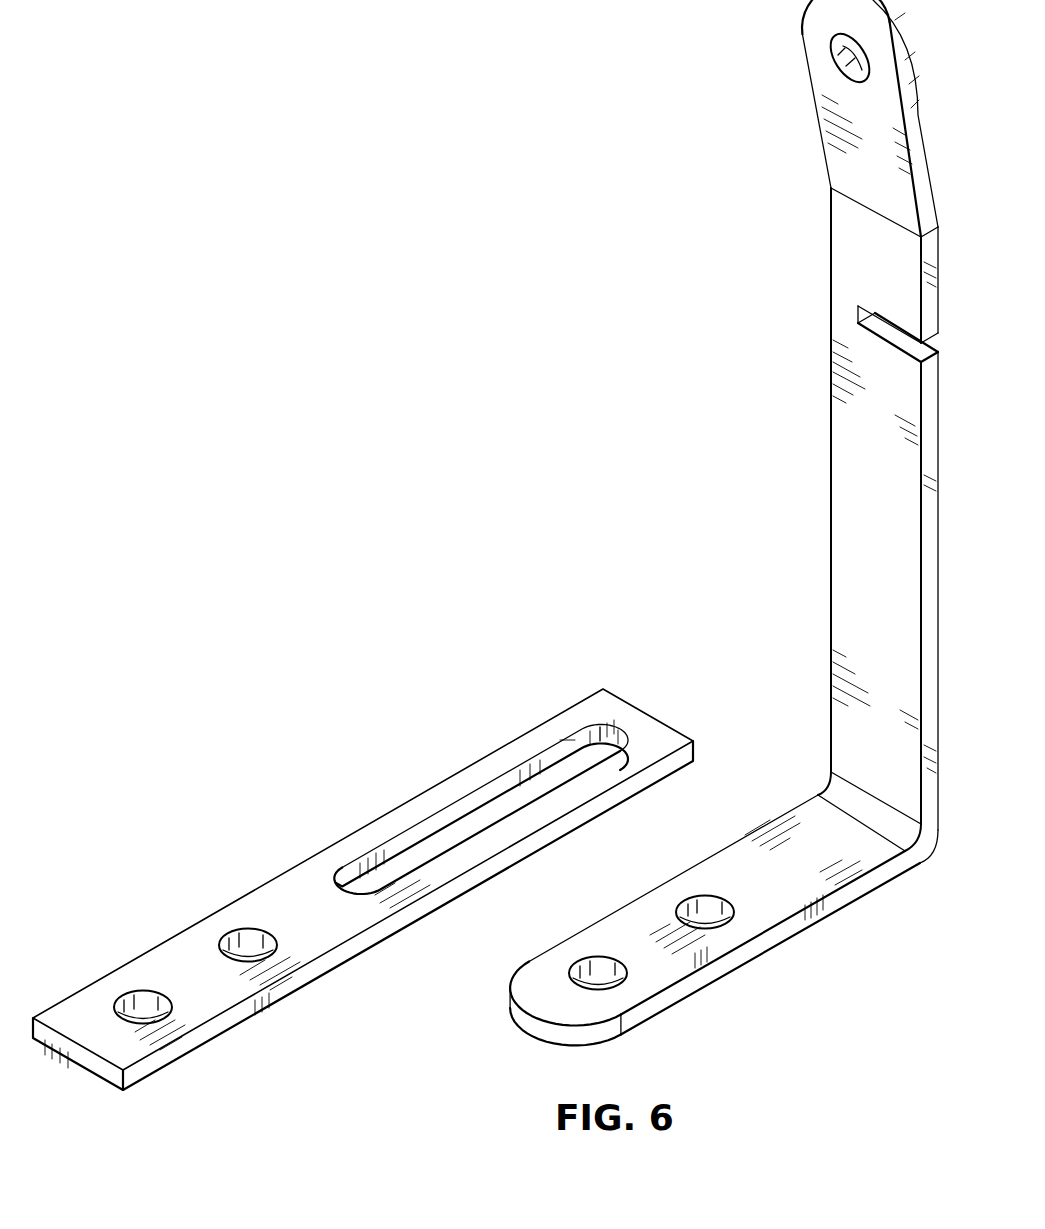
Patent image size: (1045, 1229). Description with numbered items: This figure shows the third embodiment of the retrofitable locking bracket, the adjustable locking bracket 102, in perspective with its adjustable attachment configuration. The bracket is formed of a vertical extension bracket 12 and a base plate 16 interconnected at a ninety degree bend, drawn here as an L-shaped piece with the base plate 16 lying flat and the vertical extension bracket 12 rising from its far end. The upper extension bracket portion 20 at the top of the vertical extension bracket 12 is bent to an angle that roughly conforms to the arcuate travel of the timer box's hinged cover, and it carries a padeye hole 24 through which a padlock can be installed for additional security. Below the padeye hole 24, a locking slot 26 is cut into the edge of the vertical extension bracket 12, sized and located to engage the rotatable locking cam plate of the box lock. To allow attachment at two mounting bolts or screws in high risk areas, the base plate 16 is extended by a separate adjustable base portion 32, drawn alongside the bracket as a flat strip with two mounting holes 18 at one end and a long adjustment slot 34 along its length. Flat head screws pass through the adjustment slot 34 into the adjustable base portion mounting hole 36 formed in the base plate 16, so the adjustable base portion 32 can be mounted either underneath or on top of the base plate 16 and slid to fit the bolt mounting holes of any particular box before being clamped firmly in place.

The adjustable locking bracket 102 is at (460, 132).
The vertical extension bracket 12 is at (831, 494).
The base plate 16 is at (705, 870).
The mounting hole 18 is at (242, 937).
The upper extension bracket portion 20 is at (835, 163).
The padeye hole 24 is at (843, 72).
The locking slot 26 is at (885, 328).
The adjustable base portion 32 is at (547, 732).
The adjustment slot 34 is at (462, 810).
The adjustable base portion mounting hole 36 is at (598, 975).